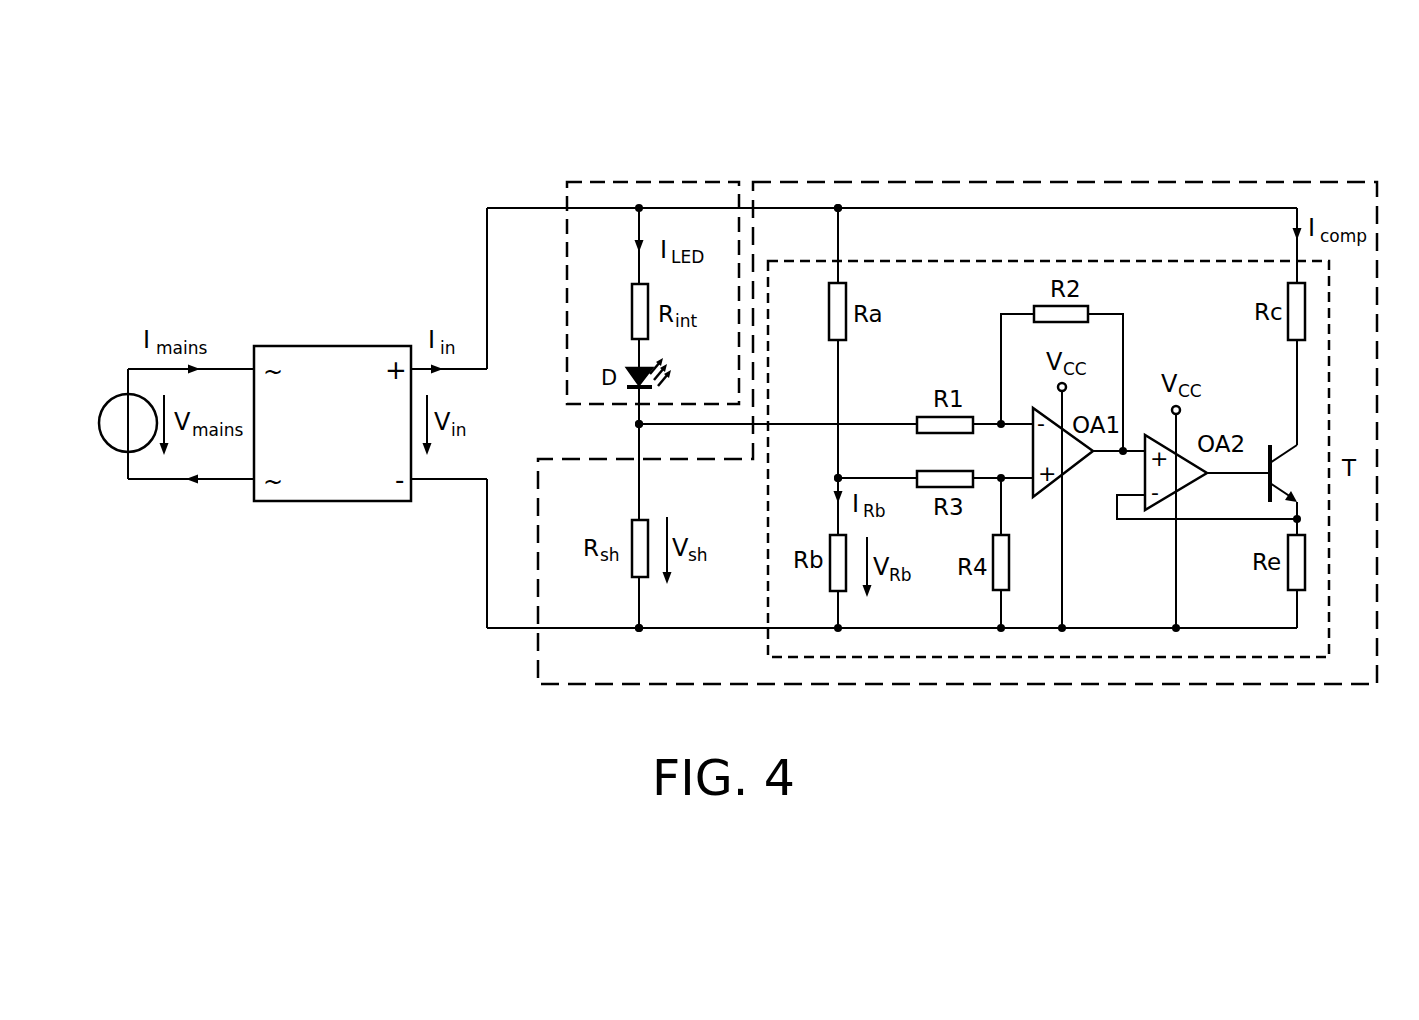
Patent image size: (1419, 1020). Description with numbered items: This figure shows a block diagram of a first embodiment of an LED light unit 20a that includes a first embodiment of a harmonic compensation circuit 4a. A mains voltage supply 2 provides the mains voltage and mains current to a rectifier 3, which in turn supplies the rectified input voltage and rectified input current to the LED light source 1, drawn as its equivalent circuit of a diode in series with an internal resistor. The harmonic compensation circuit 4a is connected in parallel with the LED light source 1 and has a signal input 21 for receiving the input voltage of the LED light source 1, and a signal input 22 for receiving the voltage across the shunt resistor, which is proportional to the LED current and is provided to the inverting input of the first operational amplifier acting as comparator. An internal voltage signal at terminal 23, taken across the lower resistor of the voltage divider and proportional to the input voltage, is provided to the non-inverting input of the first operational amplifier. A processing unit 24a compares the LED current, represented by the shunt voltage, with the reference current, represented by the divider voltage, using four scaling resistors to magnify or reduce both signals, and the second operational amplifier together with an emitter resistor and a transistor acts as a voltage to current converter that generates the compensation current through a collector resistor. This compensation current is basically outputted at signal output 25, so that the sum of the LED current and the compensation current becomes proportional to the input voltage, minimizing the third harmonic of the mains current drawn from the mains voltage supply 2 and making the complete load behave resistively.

The LED light source 1 is at (652, 182).
The mains voltage supply 2 is at (110, 396).
The rectifier 3 is at (333, 346).
The harmonic compensation circuit 4a is at (1010, 684).
The LED light unit 20a is at (1283, 123).
The signal input 21 is at (840, 196).
The signal input 22 is at (636, 425).
The terminal 23 is at (835, 479).
The processing unit 24a is at (1172, 658).
The signal output 25 is at (640, 632).